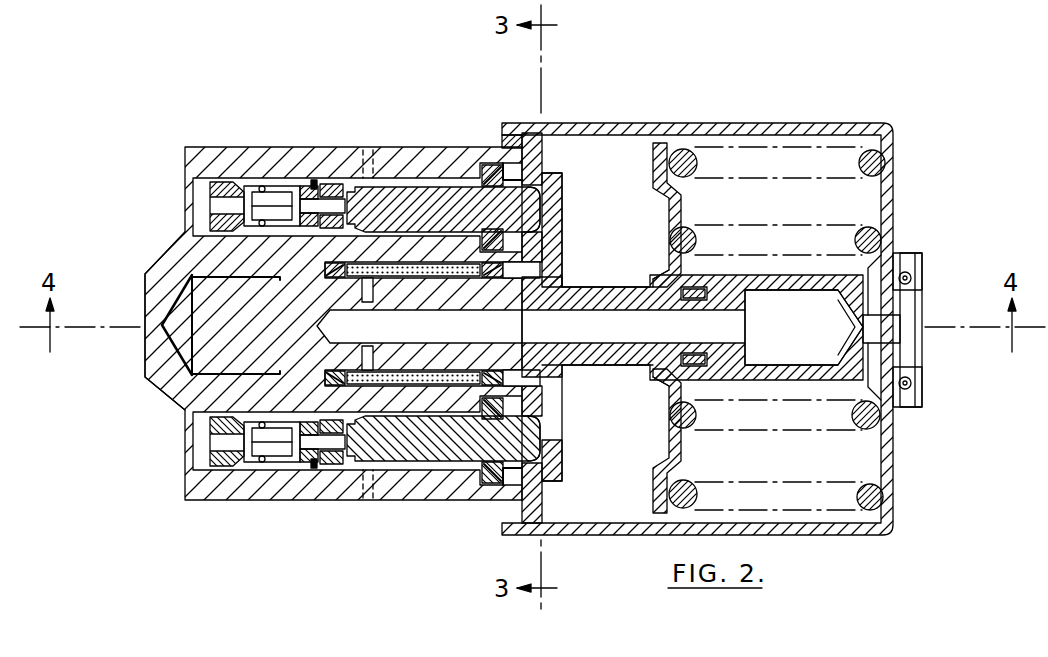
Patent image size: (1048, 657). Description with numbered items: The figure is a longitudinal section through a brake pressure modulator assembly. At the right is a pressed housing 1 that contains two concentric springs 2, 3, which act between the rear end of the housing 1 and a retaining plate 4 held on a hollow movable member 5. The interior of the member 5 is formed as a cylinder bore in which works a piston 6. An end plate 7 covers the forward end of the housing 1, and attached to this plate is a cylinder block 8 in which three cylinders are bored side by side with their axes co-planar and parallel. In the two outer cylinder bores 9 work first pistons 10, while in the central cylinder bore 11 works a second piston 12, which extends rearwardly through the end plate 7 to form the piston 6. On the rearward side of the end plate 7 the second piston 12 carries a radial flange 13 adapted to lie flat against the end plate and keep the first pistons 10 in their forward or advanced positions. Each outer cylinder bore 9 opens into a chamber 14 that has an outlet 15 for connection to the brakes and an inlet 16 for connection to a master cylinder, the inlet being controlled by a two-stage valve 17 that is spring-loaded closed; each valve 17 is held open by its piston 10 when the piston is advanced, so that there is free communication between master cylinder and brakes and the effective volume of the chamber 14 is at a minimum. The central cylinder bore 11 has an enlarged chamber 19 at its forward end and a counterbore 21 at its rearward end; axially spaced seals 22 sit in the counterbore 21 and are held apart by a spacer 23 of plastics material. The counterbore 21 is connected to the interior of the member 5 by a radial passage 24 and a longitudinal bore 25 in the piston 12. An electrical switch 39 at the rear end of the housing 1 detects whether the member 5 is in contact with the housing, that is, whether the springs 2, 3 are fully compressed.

The pressed housing 1 is at (694, 131).
The spring 2 is at (868, 165).
The spring 3 is at (872, 243).
The retaining plate 4 is at (660, 150).
The hollow movable member 5 is at (803, 279).
The piston 6 is at (652, 279).
The end plate 7 is at (528, 145).
The cylinder block 8 is at (291, 146).
The outer cylinder bore 9 is at (437, 187).
The first piston 10 is at (468, 190).
The central cylinder bore 11 is at (300, 279).
The second piston 12 is at (205, 359).
The radial flange 13 is at (562, 429).
The chamber 14 is at (345, 182).
The outlet 15 is at (370, 177).
The inlet 16 is at (190, 193).
The two-stage valve 17 is at (313, 180).
The enlarged chamber 19 is at (185, 302).
The counterbore 21 is at (510, 280).
The seal 22 is at (335, 276).
The spacer 23 is at (441, 277).
The radial passage 24 is at (372, 302).
The longitudinal bore 25 is at (706, 355).
The electrical switch 39 is at (915, 401).